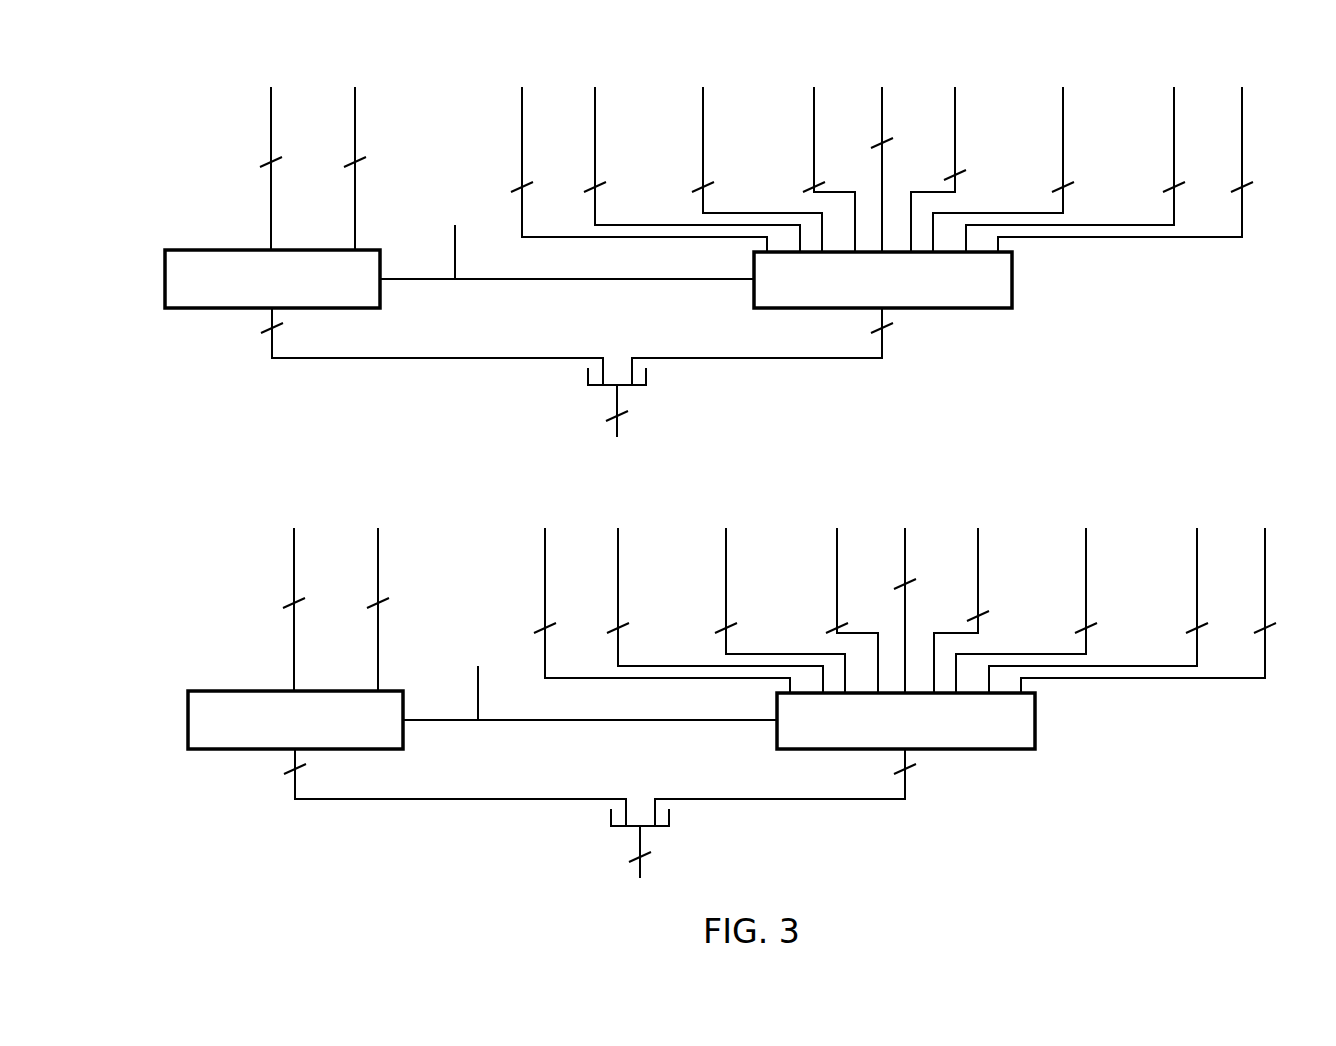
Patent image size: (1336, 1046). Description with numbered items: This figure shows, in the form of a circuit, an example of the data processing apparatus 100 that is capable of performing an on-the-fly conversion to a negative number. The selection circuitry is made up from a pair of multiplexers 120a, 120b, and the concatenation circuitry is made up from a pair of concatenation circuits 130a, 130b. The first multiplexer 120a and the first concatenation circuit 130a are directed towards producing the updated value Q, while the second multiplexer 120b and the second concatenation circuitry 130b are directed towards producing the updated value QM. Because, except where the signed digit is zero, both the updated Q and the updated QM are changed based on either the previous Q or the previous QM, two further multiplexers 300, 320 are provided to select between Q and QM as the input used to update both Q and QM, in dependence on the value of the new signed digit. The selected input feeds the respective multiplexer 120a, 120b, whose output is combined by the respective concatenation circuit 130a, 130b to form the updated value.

The data processing apparatus 100 is at (198, 448).
The multiplexer 300 is at (381, 300).
The multiplexer 320 is at (333, 727).
The multiplexer 120a is at (1013, 265).
The second multiplexer 120b is at (951, 721).
The concatenation circuit 130a is at (653, 386).
The second concatenation circuitry 130b is at (685, 860).